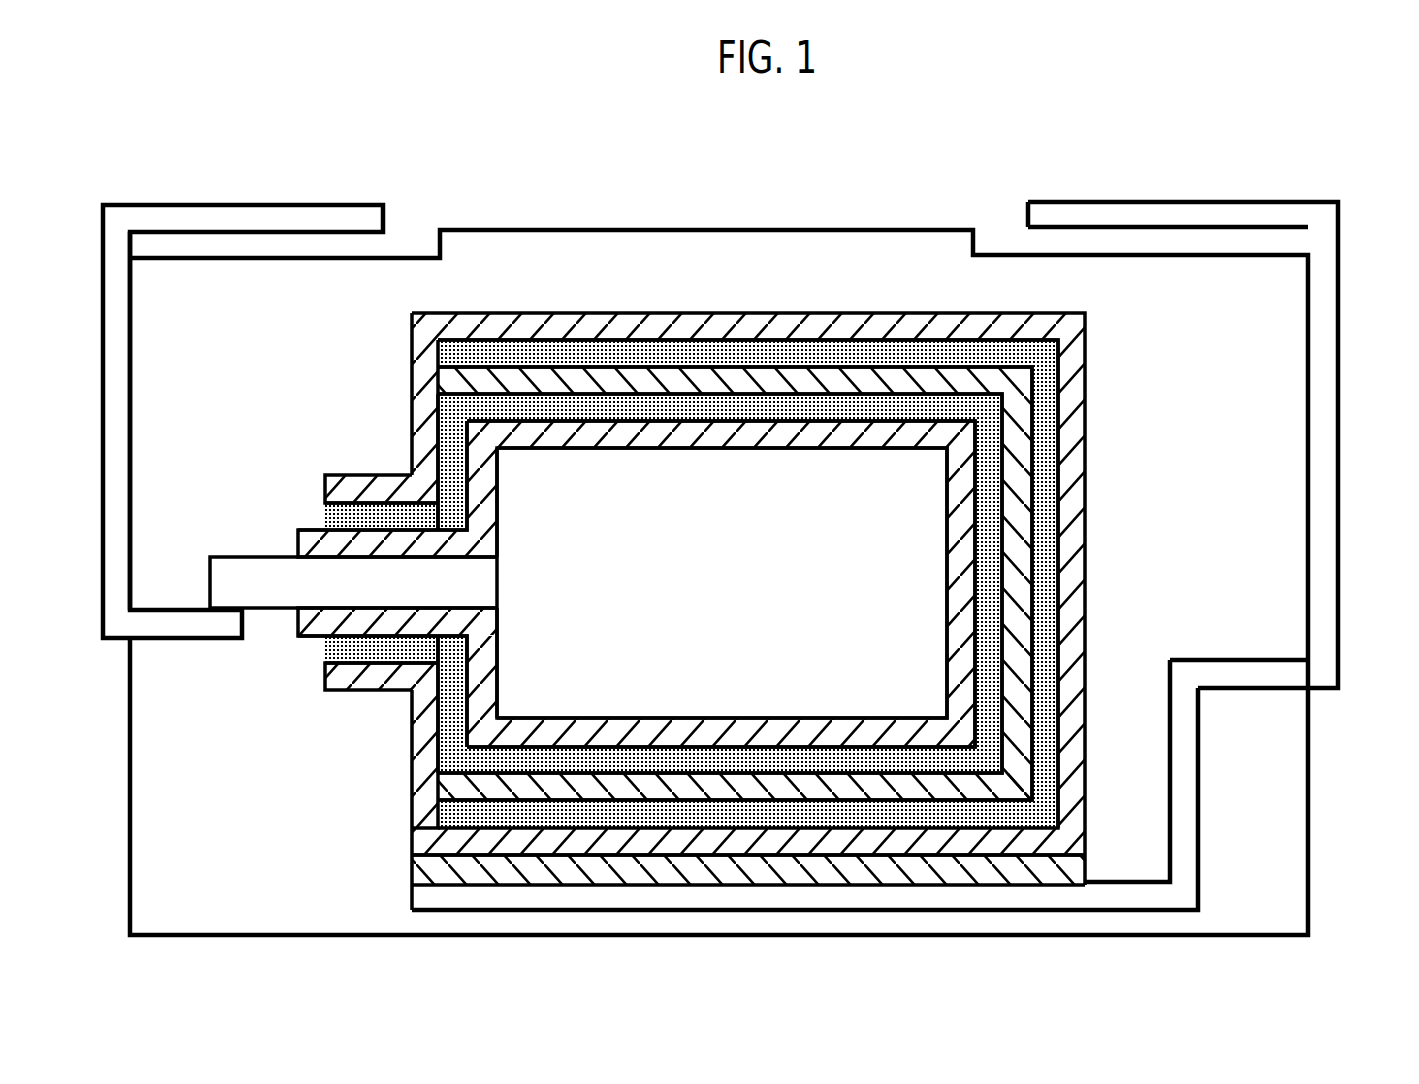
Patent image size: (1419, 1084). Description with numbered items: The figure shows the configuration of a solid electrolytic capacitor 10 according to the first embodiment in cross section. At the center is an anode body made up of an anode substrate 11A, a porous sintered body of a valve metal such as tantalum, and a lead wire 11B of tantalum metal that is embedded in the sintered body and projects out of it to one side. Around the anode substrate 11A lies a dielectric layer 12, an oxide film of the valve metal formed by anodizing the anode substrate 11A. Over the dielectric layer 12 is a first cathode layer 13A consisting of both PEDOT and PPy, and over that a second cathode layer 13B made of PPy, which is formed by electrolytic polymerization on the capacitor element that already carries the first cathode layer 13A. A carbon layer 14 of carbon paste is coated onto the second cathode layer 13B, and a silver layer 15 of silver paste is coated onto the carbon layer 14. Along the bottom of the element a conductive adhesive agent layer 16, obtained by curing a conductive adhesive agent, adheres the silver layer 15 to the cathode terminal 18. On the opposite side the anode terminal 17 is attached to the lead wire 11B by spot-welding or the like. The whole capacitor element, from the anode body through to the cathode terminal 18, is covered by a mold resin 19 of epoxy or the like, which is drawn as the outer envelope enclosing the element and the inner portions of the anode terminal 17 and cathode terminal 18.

The solid electrolytic capacitor 10 is at (1316, 144).
The anode substrate 11A is at (915, 643).
The lead wire 11B is at (266, 566).
The dielectric layer 12 is at (960, 542).
The first cathode layer 13A is at (990, 484).
The second cathode layer 13B is at (1020, 430).
The carbon layer 14 is at (1047, 390).
The silver layer 15 is at (1070, 344).
The conductive adhesive agent layer 16 is at (1080, 866).
The anode terminal 17 is at (263, 216).
The cathode terminal 18 is at (1323, 457).
The mold resin 19 is at (713, 248).